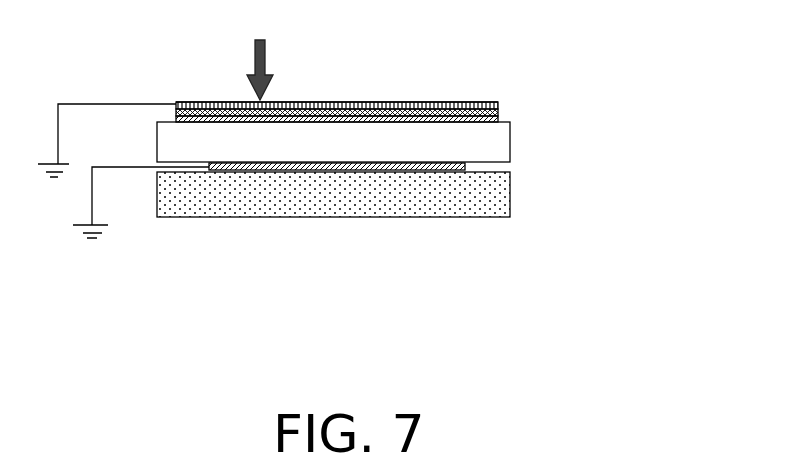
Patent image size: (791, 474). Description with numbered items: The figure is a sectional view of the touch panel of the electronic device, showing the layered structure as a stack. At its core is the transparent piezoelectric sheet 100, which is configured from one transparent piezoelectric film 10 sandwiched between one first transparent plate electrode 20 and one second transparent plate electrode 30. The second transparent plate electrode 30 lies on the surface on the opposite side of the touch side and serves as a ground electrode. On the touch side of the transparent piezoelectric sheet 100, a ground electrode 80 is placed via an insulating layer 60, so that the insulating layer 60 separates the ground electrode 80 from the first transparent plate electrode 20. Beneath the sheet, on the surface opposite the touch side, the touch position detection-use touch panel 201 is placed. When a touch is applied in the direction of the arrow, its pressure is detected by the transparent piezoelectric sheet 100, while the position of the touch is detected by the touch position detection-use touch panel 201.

The ground electrode 80 is at (440, 103).
The insulating layer 60 is at (498, 108).
The first transparent plate electrode 20 is at (498, 115).
The transparent piezoelectric film 10 is at (487, 140).
The second transparent plate electrode 30 is at (463, 166).
The transparent piezoelectric sheet 100 is at (442, 97).
The touch position detection-use touch panel 201 is at (500, 197).